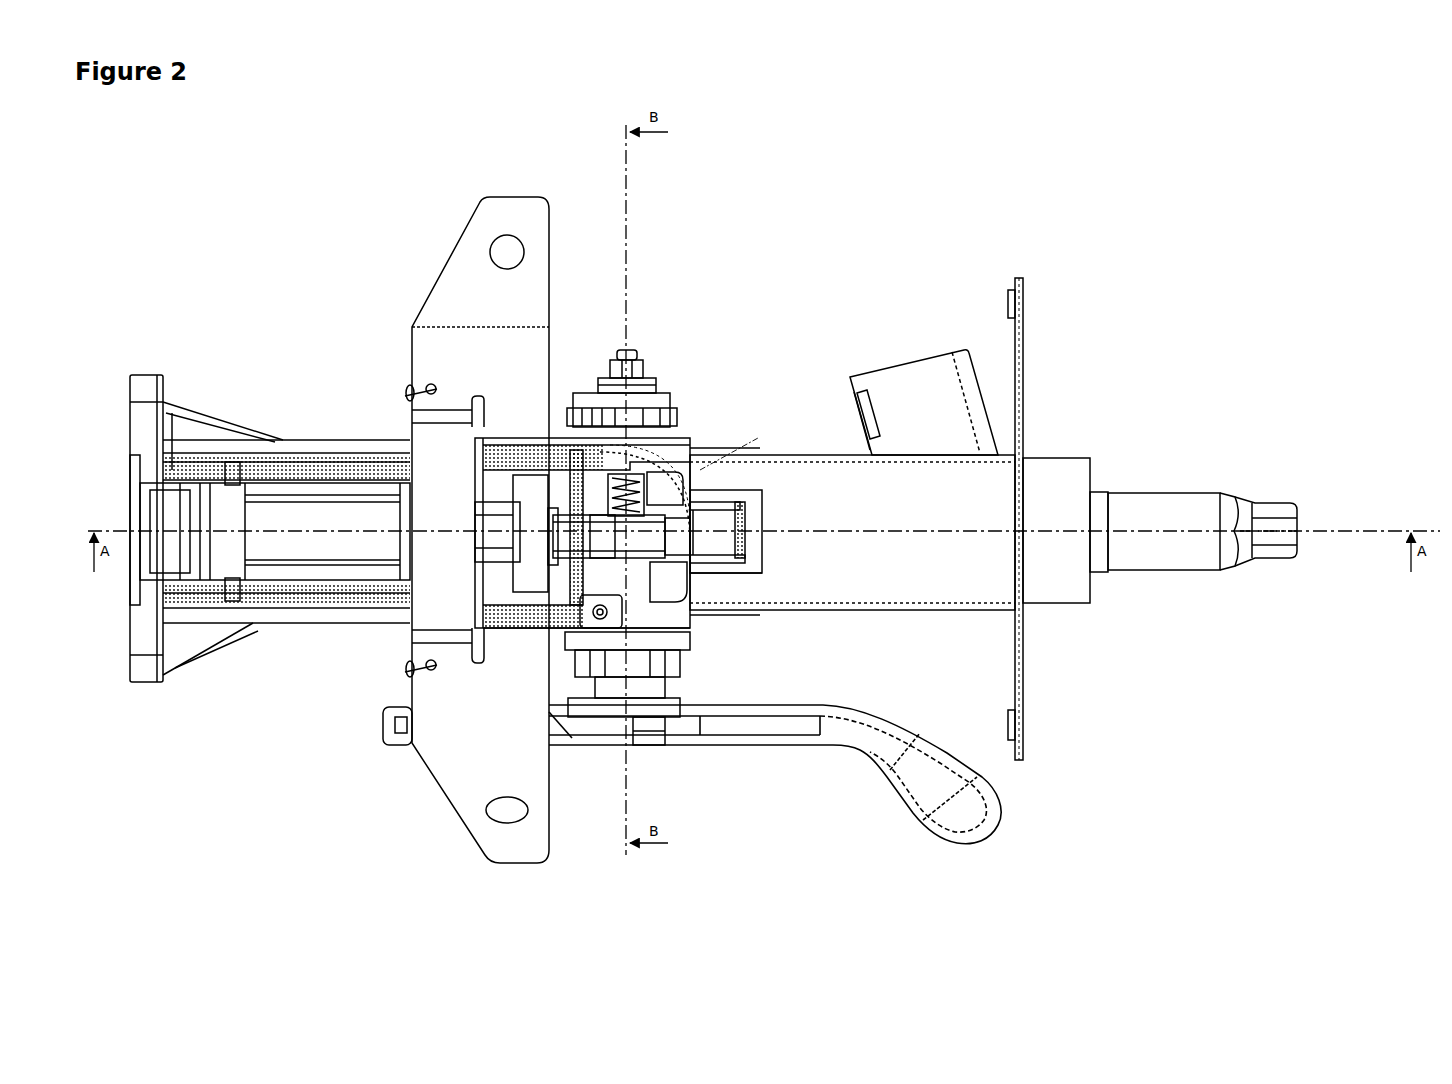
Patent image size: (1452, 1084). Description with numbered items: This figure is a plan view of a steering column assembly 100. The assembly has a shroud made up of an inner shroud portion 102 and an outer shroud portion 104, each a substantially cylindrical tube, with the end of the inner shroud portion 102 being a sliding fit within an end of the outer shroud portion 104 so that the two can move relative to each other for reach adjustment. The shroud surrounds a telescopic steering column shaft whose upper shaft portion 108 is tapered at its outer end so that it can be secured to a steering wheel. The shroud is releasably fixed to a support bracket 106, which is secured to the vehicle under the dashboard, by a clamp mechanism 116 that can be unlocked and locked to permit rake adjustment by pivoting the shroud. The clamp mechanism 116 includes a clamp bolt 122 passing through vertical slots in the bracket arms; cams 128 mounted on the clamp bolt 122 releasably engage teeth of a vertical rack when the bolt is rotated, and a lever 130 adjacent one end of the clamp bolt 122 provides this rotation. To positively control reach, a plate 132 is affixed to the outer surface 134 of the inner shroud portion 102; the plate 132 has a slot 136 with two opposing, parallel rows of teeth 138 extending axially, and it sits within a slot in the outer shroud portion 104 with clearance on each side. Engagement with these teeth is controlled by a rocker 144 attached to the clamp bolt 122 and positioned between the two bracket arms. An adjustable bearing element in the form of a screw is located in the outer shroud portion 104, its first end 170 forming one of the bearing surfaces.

The steering column assembly 100 is at (1030, 176).
The inner shroud portion 102 is at (978, 512).
The outer shroud portion 104 is at (290, 447).
The support bracket 106 is at (455, 372).
The upper shaft portion 108 is at (1190, 512).
The clamp mechanism 116 is at (645, 364).
The clamp bolt 122 is at (628, 503).
The cams 128 is at (622, 642).
The lever 130 is at (940, 790).
The plate 132 is at (757, 523).
The outer surface 134 is at (965, 470).
The slot 136 is at (722, 538).
The rows of teeth 138 is at (673, 510).
The rocker 144 is at (625, 548).
The first end 170 is at (630, 485).